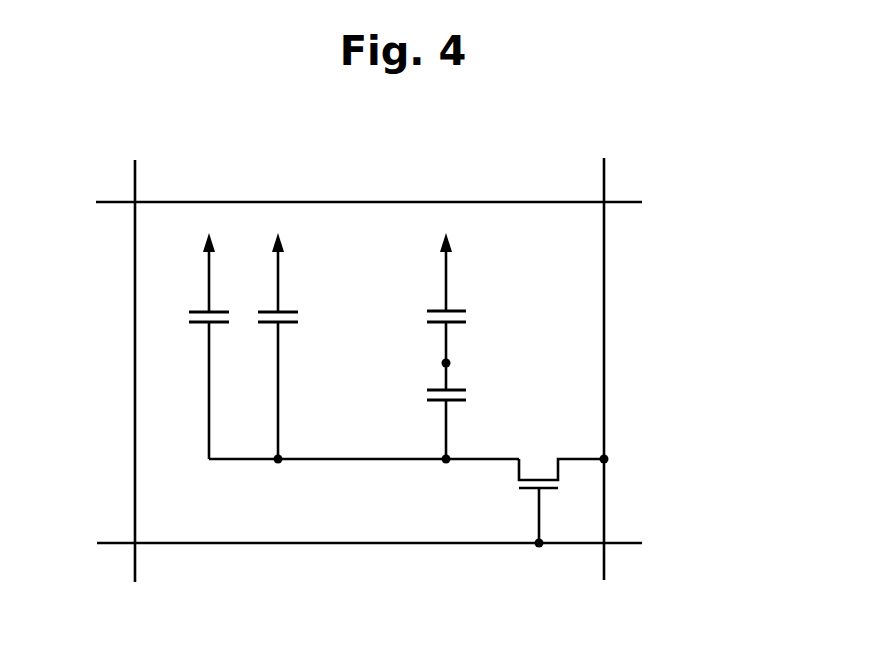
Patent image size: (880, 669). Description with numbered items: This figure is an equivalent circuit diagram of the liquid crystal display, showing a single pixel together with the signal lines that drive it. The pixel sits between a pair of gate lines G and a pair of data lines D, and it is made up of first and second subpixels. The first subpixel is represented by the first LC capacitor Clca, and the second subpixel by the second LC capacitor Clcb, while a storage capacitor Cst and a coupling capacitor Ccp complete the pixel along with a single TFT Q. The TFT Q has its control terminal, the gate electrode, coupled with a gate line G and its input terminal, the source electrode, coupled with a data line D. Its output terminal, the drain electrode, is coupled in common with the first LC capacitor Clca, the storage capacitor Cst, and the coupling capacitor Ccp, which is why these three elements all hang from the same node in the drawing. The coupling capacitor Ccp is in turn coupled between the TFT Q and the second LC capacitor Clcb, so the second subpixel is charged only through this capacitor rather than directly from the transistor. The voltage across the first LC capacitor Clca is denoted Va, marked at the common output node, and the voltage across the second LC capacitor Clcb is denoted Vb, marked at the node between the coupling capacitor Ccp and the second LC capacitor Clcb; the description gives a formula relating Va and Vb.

The data line D is at (368, 356).
The gate line G is at (358, 373).
The first LC capacitor Clca is at (187, 346).
The storage capacitor Cst is at (295, 346).
The second LC capacitor Clcb is at (420, 298).
The coupling capacitor Ccp is at (424, 410).
The voltage across the first LC capacitor Va is at (364, 475).
The voltage across the second LC capacitor Vb is at (464, 364).
The TFT Q is at (550, 501).